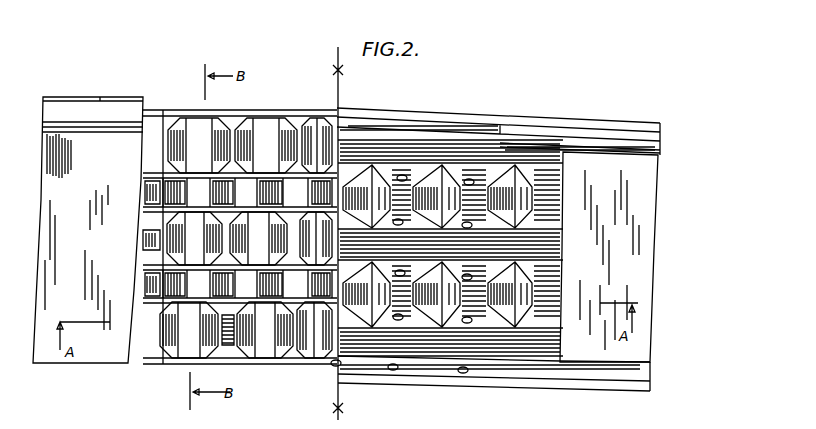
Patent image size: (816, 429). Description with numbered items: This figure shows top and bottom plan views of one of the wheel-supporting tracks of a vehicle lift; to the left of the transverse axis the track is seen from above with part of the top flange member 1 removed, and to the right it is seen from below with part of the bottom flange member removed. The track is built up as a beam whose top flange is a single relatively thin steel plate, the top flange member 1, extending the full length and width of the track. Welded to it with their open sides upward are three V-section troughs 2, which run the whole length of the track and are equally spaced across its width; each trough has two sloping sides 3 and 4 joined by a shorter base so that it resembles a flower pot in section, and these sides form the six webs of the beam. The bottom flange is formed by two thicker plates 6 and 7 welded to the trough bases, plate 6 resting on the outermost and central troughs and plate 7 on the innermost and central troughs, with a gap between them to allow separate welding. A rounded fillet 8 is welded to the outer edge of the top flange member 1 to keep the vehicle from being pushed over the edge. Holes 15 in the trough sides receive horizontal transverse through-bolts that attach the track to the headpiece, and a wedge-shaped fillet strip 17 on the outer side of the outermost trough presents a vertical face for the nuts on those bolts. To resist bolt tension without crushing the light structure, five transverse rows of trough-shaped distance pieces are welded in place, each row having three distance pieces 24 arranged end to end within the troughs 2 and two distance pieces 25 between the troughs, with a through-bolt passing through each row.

The top flange member 1 is at (62, 229).
The V-section troughs 2 is at (238, 118).
The sloping side 3 is at (170, 168).
The sloping side 4 is at (158, 110).
The bottom flange plate 6 is at (625, 210).
The bottom flange plate 7 is at (600, 345).
The rounded fillet 8 is at (65, 106).
The holes 15 is at (470, 179).
The wedge-shaped fillet strip 17 is at (447, 123).
The distance pieces 24 is at (202, 117).
The distance pieces 25 is at (142, 176).